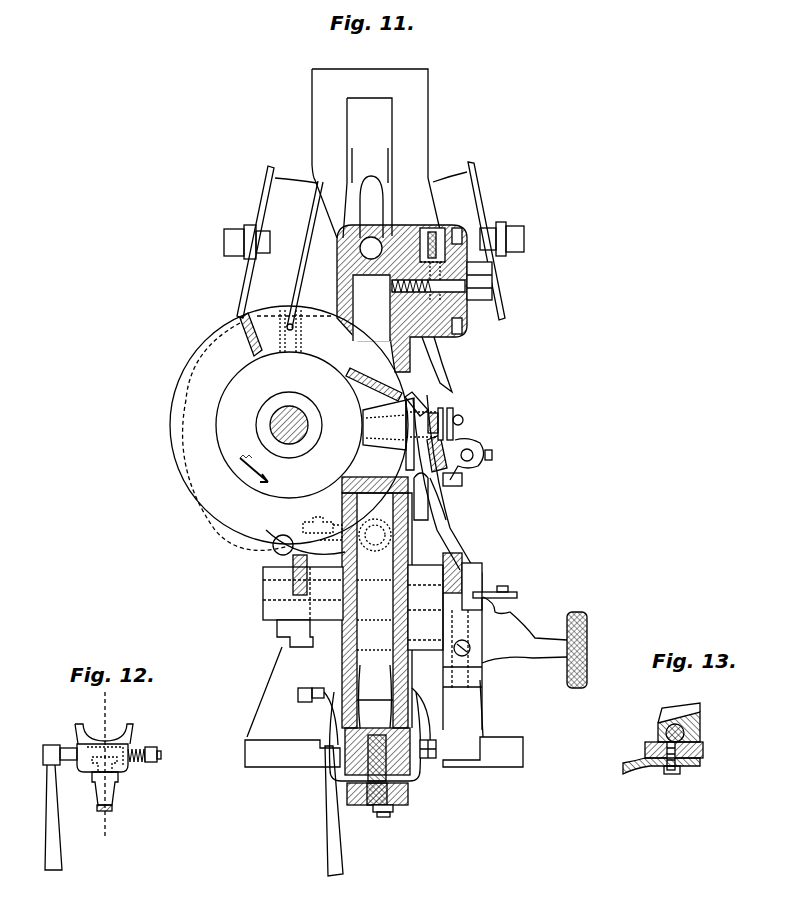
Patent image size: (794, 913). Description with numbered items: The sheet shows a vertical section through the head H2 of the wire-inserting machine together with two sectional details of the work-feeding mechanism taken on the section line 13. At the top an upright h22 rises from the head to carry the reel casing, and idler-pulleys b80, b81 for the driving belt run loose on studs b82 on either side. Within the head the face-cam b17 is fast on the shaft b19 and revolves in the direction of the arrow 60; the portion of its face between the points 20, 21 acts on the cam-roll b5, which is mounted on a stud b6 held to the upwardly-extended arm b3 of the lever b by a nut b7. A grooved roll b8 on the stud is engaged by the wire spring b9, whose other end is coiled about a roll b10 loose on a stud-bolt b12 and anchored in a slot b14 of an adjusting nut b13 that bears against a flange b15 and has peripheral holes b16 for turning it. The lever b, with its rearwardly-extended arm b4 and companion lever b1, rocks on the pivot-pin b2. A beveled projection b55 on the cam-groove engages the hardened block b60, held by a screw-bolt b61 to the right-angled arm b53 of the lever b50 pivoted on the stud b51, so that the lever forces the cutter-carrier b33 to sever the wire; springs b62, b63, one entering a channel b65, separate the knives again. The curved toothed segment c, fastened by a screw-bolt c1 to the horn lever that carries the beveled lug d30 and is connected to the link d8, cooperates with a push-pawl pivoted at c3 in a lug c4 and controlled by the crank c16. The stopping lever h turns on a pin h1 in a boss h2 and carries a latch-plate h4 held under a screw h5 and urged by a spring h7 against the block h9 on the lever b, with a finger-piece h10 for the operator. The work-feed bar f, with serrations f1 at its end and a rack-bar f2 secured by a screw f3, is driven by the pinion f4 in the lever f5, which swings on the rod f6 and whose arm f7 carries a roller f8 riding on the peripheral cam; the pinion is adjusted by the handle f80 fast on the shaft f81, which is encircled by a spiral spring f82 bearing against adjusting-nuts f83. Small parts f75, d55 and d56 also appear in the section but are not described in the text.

In FIG. 11, the lug or upright h22 is at (392, 128).
In FIG. 11, the idler-pulley b80 is at (262, 182).
In FIG. 11, the idler-pulley b81 is at (480, 196).
In FIG. 11, the shaft or stud b82 is at (230, 222).
In FIG. 11, the beveled projection b55 is at (330, 300).
In FIG. 11, the roll b10 is at (398, 222).
In FIG. 11, the flange b15 is at (435, 228).
In FIG. 11, the stud-bolt b12 is at (390, 287).
In FIG. 11, the adjusting collar or nut b13 is at (462, 330).
In FIG. 11, the slot or opening b14 is at (492, 265).
In FIG. 11, the face-cam b17 is at (195, 392).
In FIG. 11, the cam point 21 is at (321, 355).
In FIG. 11, the cam-shaft b19 is at (268, 424).
In FIG. 11, the arrow 60 is at (255, 466).
In FIG. 11, the cam-roll b5 is at (360, 420).
In FIG. 11, the cam point 20 is at (364, 430).
In FIG. 11, the stud or pin b6 is at (392, 460).
In FIG. 11, the curved arm or segment c is at (425, 400).
In FIG. 11, the spring b9 is at (442, 352).
In FIG. 11, the peripheral holes b16 is at (463, 340).
In FIG. 11, the upwardly-extended arm b3 is at (455, 522).
In FIG. 11, the nut b7 is at (443, 410).
In FIG. 11, the grooved wheel or roll b8 is at (453, 418).
In FIG. 11, the lug or projection d30 is at (462, 422).
In FIG. 11, the pivot c3 is at (484, 446).
In FIG. 11, the crank or arm c16 is at (473, 455).
In FIG. 11, the lug or projection c4 is at (492, 460).
In FIG. 11, the screw-bolt c1 is at (462, 482).
In FIG. 11, the link or rod d8 is at (430, 520).
In FIG. 11, the rearwardly-extended arm b4 is at (478, 542).
In FIG. 11, the block or lug h9 is at (478, 568).
In FIG. 11, the lever or arm b is at (490, 580).
In FIG. 11, the pivot rod or shaft f6 is at (380, 518).
In FIG. 11, the lever or arm b1 is at (266, 592).
In FIG. 11, the pivot-pin or shaft b2 is at (270, 576).
In FIG. 11, the lever-arm b53 is at (286, 600).
In FIG. 11, the arm f7 is at (275, 555).
In FIG. 11, the roller f8 is at (273, 548).
In FIG. 11, the screw-bolt b61 is at (302, 527).
In FIG. 11, the hardened block b60 is at (328, 527).
In FIG. 11, the lever b50 is at (350, 655).
In FIG. 11, the stud, bolt, or pin b51 is at (422, 592).
In FIG. 11, the arm or lever h is at (530, 630).
In FIG. 11, the handle or finger-piece h10 is at (563, 654).
In FIG. 11, the latch-plate h4 is at (502, 586).
In FIG. 11, the screw h5 is at (504, 592).
In FIG. 11, the spring h7 is at (516, 595).
In FIG. 11, the stud or pin h1 is at (470, 667).
In FIG. 11, the boss or ear h2 is at (473, 687).
In FIG. 11, the head H2 is at (513, 714).
In FIG. 11, the spring b63 is at (334, 730).
In FIG. 11, the nut f75 is at (300, 702).
In FIG. 11, the lever f5 is at (330, 702).
In FIG. 12, the lever f5 is at (80, 725).
In FIG. 13, the lever f5 is at (700, 722).
In FIG. 11, the spring b62 is at (430, 712).
In FIG. 11, the shaft f81 is at (436, 745).
In FIG. 12, the shaft f81 is at (160, 752).
In FIG. 11, the adjusting-nuts f83 is at (430, 762).
In FIG. 12, the adjusting-nuts f83 is at (152, 762).
In FIG. 11, the cutter-carrier b33 is at (410, 762).
In FIG. 11, the groove, slot, or channel b65 is at (347, 792).
In FIG. 11, the washer d55 is at (393, 808).
In FIG. 11, the washer d56 is at (373, 810).
In FIG. 11, the teeth or serrations f1 is at (385, 817).
In FIG. 12, the teeth or serrations f1 is at (100, 811).
In FIG. 11, the crank or handle f80 is at (328, 828).
In FIG. 12, the crank or handle f80 is at (47, 815).
In FIG. 12, the section line 13 is at (106, 767).
In FIG. 12, the bar f is at (115, 795).
In FIG. 13, the bar f is at (630, 774).
In FIG. 12, the spiral spring f82 is at (138, 749).
In FIG. 13, the rack-bar f2 is at (645, 748).
In FIG. 13, the pinion f4 is at (667, 726).
In FIG. 13, the screw f3 is at (674, 774).